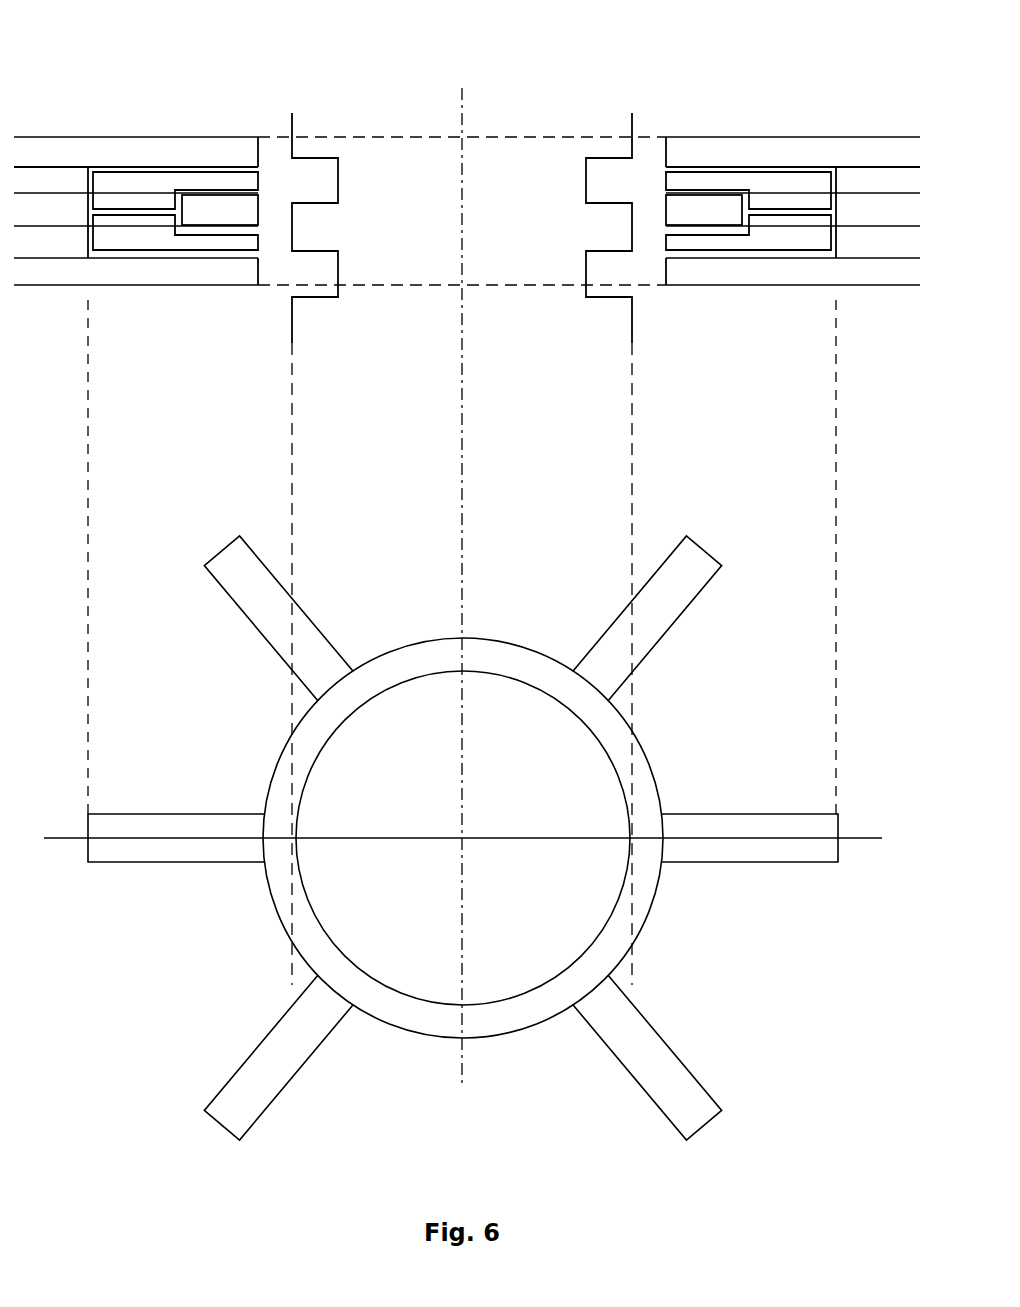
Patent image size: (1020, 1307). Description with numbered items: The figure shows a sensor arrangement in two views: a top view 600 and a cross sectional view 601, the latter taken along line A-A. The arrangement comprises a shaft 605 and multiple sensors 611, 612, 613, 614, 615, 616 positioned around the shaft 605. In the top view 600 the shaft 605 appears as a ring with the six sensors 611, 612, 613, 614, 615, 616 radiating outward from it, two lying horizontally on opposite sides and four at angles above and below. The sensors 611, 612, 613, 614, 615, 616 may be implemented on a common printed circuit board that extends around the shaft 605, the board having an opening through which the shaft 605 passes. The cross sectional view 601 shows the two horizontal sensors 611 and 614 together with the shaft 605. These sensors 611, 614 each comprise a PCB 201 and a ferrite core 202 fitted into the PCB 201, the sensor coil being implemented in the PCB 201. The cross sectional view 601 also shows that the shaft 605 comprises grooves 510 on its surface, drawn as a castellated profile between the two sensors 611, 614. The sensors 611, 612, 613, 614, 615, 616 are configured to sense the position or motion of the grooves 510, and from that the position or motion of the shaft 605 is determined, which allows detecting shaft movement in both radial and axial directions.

The printed circuit board 201 is at (65, 210).
The piece of ferrite 202 is at (143, 193).
The grooves 510 is at (597, 235).
The top view 600 is at (117, 1148).
The cross sectional view 601 is at (548, 38).
The shaft 605 is at (543, 325).
The sensor 611 is at (158, 325).
The sensor 612 is at (295, 608).
The sensor 613 is at (667, 632).
The sensor 614 is at (815, 310).
The sensor 615 is at (683, 1065).
The sensor 616 is at (285, 1088).